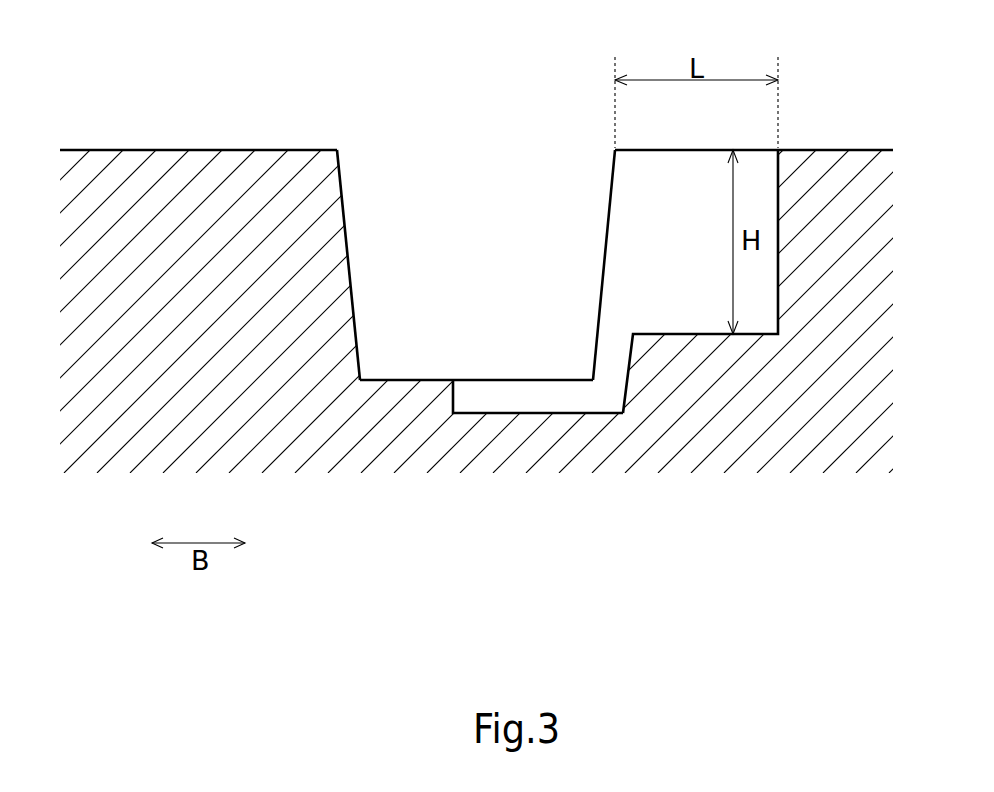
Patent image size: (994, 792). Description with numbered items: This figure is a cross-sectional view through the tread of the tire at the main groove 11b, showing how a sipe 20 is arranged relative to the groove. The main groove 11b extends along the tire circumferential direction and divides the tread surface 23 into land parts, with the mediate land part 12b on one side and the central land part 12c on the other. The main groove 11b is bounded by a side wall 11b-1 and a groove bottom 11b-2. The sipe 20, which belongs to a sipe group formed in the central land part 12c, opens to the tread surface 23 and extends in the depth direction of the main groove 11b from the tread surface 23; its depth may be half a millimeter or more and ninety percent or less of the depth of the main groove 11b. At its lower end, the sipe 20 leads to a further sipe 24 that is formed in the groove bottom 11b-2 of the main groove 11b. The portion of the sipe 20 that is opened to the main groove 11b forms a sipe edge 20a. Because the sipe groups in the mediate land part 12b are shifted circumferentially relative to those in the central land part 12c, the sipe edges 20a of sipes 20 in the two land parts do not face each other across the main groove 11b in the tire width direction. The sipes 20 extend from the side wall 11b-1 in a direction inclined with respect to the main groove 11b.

The mediate land part 12b is at (172, 185).
The central land part 12c is at (858, 180).
The tread surface 23 is at (817, 150).
The main groove 11b is at (452, 295).
The side wall of the main groove 11b-1 is at (343, 205).
The groove bottom of the main groove 11b-2 is at (433, 380).
The sipe edge 20a is at (605, 248).
The sipe formed in the groove bottom 24 is at (505, 413).
The sipe 20 is at (695, 334).